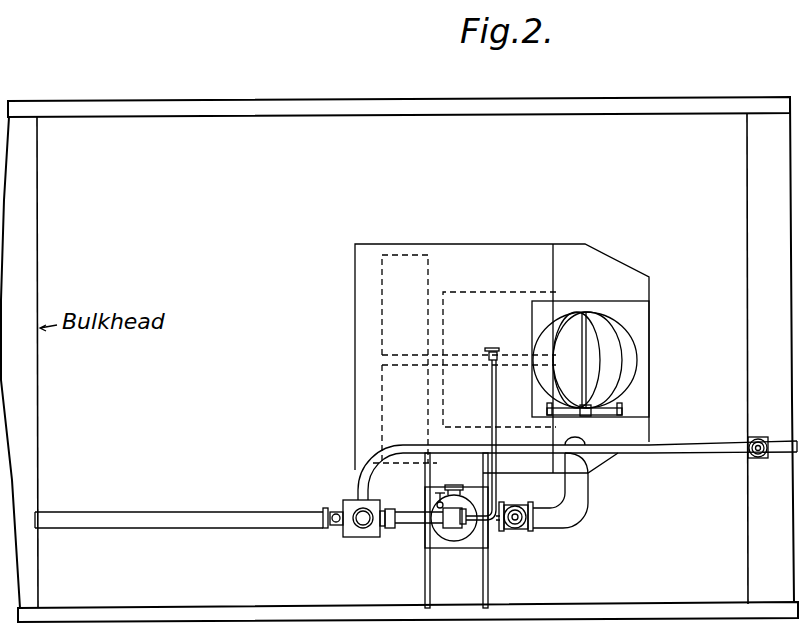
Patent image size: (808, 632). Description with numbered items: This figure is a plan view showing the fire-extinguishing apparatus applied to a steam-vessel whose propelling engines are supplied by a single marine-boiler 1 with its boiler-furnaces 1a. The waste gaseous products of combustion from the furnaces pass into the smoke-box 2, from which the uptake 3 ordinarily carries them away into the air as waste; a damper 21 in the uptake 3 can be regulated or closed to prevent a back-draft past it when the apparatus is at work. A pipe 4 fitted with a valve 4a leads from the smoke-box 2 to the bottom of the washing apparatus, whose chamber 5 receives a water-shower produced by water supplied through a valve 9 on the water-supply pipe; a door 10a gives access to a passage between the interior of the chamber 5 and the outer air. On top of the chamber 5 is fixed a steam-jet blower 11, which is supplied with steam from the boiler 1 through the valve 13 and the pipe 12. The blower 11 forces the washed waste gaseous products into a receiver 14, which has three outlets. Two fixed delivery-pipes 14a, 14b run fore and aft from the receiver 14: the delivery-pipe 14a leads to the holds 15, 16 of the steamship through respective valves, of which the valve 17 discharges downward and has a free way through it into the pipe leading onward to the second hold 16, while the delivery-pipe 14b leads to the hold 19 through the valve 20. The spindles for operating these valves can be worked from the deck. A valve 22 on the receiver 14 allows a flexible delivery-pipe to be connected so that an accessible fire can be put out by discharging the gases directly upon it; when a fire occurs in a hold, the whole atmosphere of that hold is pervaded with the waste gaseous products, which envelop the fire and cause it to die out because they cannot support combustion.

The marine-boiler 1 is at (450, 296).
The boiler-furnaces 1a is at (462, 408).
The smoke-box 2 is at (590, 359).
The uptake 3 is at (585, 360).
The pipe 4 is at (560, 482).
The valve 4a is at (513, 533).
The chamber 5 is at (454, 521).
The valve 9 is at (435, 503).
The door 10a is at (447, 485).
The steam-jet blower 11 is at (422, 518).
The pipe 12 is at (497, 419).
The valve 13 is at (496, 350).
The receiver 14 is at (347, 537).
The delivery-pipe 14a is at (669, 449).
The delivery-pipe 14b is at (117, 518).
The hold 15 is at (761, 358).
The hold 16 is at (748, 235).
The valve 17 is at (758, 459).
The hold 19 is at (17, 362).
The valve 20 is at (331, 511).
The damper 21 is at (584, 364).
The valve 22 is at (360, 512).